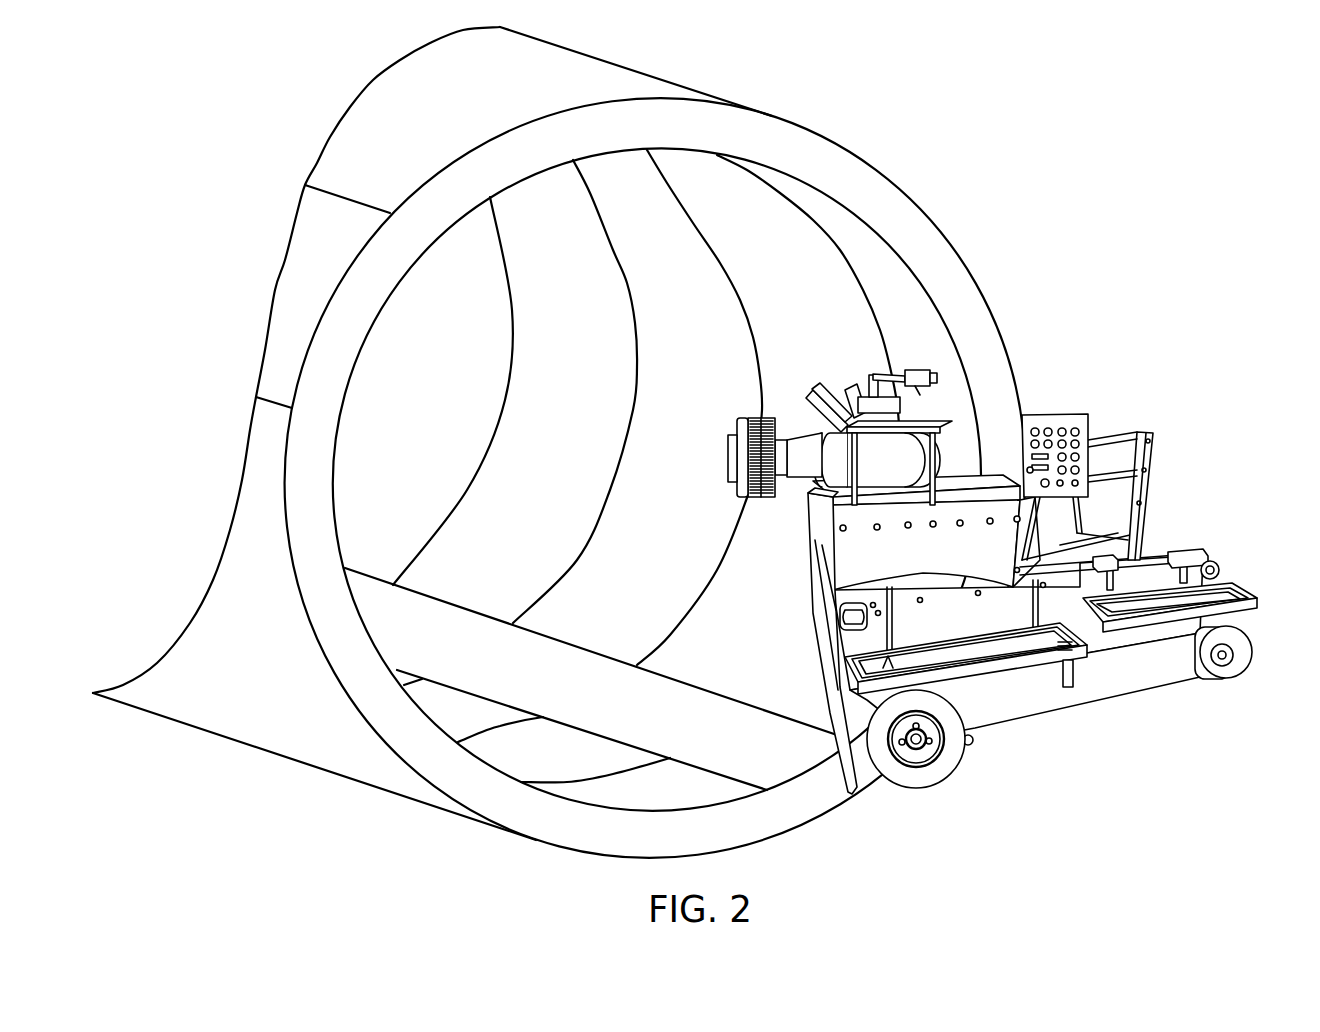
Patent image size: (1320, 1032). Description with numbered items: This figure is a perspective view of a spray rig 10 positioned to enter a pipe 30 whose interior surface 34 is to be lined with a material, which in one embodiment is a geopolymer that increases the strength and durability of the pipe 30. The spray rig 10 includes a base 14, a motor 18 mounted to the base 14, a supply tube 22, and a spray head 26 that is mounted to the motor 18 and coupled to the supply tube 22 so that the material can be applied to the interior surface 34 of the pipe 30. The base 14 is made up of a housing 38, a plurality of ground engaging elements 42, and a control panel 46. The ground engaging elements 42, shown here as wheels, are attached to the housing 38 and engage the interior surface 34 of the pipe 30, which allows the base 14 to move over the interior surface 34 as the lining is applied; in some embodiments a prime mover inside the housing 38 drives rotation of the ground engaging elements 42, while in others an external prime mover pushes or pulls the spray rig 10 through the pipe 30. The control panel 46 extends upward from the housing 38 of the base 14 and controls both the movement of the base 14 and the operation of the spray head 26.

The spray rig 10 is at (1004, 553).
The base 14 is at (1037, 698).
The motor 18 is at (905, 458).
The supply tube 22 is at (841, 397).
The spray head 26 is at (805, 470).
The pipe 30 is at (240, 700).
The interior surface 34 is at (737, 243).
The housing 38 is at (1010, 613).
The ground engaging elements 42 is at (867, 748).
The control panel 46 is at (1055, 415).